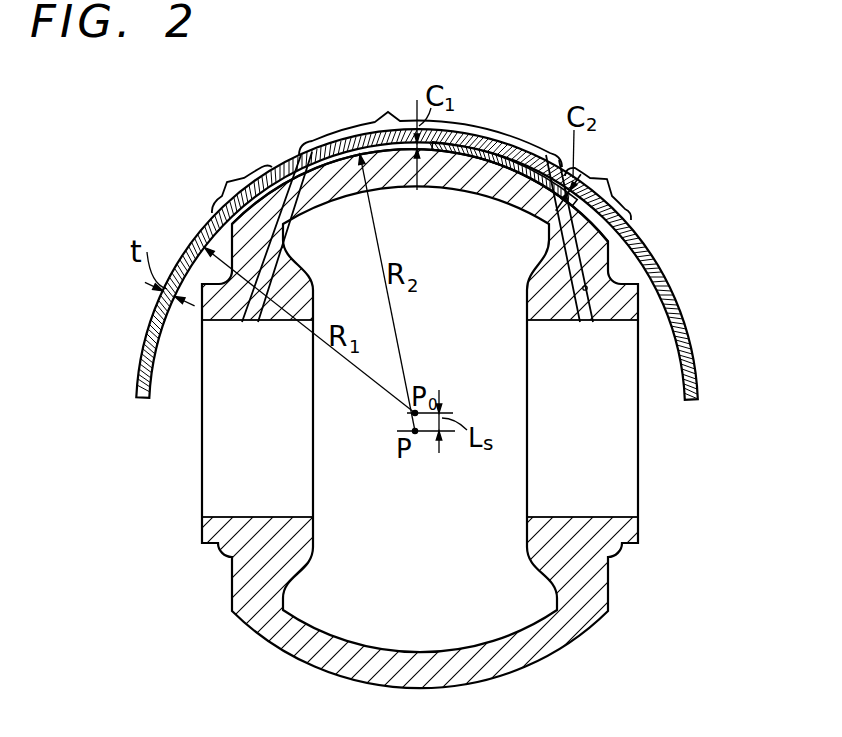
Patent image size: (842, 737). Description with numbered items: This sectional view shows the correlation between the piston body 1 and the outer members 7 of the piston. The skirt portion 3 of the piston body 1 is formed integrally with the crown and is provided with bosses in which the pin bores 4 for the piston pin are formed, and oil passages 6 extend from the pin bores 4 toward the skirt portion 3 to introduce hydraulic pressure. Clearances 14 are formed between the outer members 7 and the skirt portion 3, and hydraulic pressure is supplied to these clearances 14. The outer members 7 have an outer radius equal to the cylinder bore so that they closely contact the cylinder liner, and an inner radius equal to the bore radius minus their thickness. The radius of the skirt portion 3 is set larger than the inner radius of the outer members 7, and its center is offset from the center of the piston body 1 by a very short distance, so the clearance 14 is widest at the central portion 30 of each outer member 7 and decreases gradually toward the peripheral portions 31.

The piston body 1 is at (587, 260).
The skirt portion 3 is at (493, 176).
The pin bores 4 is at (597, 516).
The oil passages 6 is at (300, 166).
The outer members 7 is at (683, 323).
The clearances 14 is at (468, 150).
The central portion 30 is at (430, 124).
The peripheral portions 31 is at (425, 182).